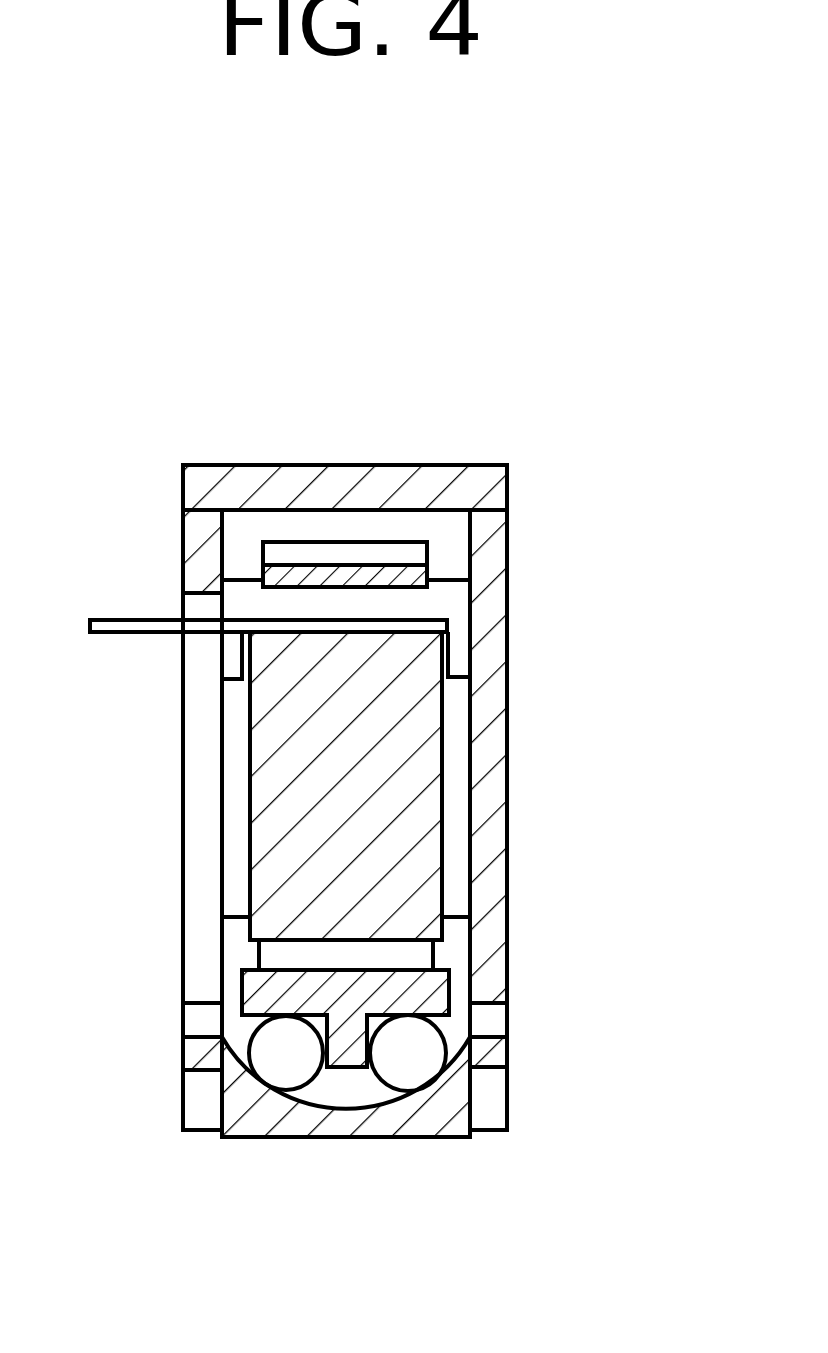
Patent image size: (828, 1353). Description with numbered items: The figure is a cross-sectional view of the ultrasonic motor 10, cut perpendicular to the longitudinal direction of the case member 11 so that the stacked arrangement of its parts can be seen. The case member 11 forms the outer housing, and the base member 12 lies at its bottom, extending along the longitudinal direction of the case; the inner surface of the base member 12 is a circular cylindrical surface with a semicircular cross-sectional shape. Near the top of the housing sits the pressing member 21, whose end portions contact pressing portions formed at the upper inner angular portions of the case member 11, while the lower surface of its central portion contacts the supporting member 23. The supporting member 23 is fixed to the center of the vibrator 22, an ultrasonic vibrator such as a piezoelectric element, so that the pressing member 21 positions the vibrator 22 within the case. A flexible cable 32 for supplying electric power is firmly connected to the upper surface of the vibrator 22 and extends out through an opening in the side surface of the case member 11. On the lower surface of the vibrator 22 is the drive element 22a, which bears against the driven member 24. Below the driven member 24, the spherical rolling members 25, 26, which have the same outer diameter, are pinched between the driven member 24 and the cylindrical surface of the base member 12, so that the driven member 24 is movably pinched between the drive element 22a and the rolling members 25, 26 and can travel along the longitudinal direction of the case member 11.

The ultrasonic motor 10 is at (380, 1322).
The case member 11 is at (257, 465).
The base member 12 is at (433, 1112).
The pressing member 21 is at (327, 573).
The vibrator 22 is at (413, 731).
The drive element 22a is at (417, 953).
The supporting member 23 is at (440, 593).
The driven member 24 is at (417, 995).
The rolling member 25 is at (277, 1052).
The rolling member 26 is at (420, 1053).
The flexible cable 32 is at (133, 620).